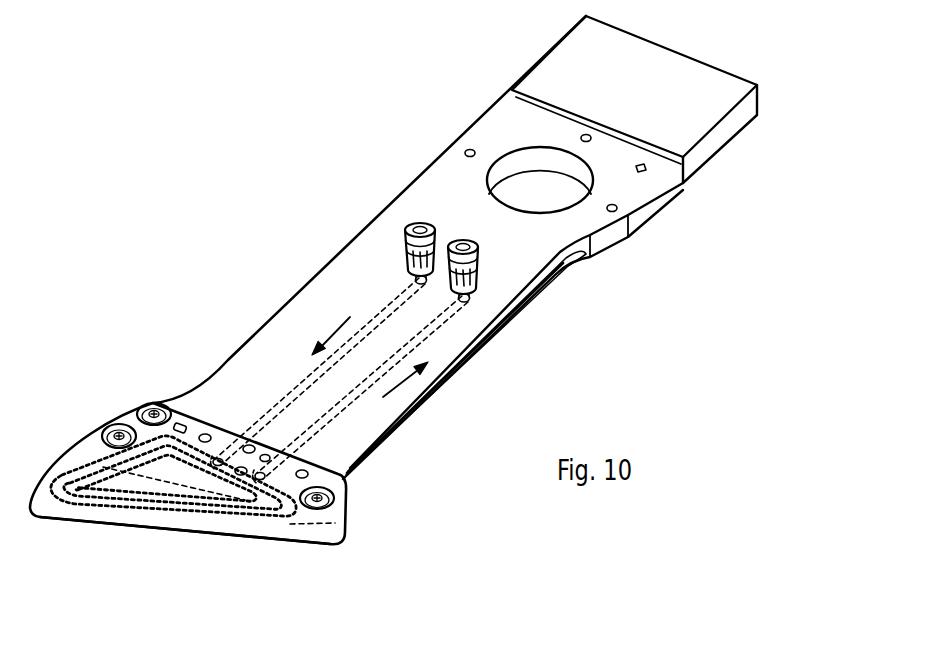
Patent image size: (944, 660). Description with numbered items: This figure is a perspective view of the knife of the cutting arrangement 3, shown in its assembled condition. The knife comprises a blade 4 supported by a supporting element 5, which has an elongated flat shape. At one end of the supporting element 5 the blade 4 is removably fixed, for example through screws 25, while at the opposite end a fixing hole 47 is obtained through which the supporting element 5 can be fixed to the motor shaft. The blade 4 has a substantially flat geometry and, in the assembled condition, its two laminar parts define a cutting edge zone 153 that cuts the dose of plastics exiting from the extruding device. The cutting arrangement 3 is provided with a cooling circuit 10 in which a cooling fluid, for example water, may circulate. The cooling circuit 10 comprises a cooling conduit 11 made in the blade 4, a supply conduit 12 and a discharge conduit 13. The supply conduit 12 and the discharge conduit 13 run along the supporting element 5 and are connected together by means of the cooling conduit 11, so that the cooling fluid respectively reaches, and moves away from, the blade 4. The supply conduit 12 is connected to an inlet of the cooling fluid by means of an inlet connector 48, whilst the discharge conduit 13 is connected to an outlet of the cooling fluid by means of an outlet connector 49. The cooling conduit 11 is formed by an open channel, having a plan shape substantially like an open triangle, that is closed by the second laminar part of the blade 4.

The cutting arrangement 3 is at (393, 321).
The blade 4 is at (318, 563).
The supporting element 5 is at (300, 320).
The cooling circuit 10 is at (235, 430).
The cooling conduit 11 is at (101, 446).
The supply conduit 12 is at (335, 422).
The discharge conduit 13 is at (420, 343).
The screws 25 is at (149, 404).
The fixing hole 47 is at (513, 165).
The inlet connector 48 is at (420, 226).
The outlet connector 49 is at (478, 247).
The cutting edge zone 153 is at (262, 535).